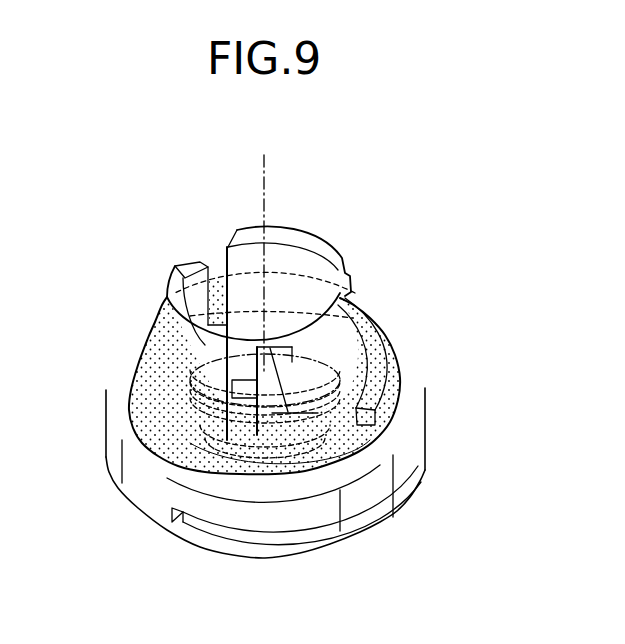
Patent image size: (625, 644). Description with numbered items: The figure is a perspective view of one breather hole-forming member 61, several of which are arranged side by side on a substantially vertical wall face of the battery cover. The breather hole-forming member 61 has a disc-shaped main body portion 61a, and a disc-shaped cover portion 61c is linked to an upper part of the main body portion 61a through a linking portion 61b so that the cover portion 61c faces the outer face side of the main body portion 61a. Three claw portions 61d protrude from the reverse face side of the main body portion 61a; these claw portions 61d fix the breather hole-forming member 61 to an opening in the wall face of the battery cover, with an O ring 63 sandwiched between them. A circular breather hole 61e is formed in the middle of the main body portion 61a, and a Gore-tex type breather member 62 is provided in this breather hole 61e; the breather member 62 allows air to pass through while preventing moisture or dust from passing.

The breather hole-forming member 61 is at (409, 307).
The main body portion 61a is at (410, 405).
The linking portion 61b is at (152, 502).
The cover portion 61c is at (358, 530).
The claw portions 61d is at (182, 275).
The breather hole 61e is at (227, 247).
The breather member 62 is at (233, 440).
The O ring 63 is at (147, 380).